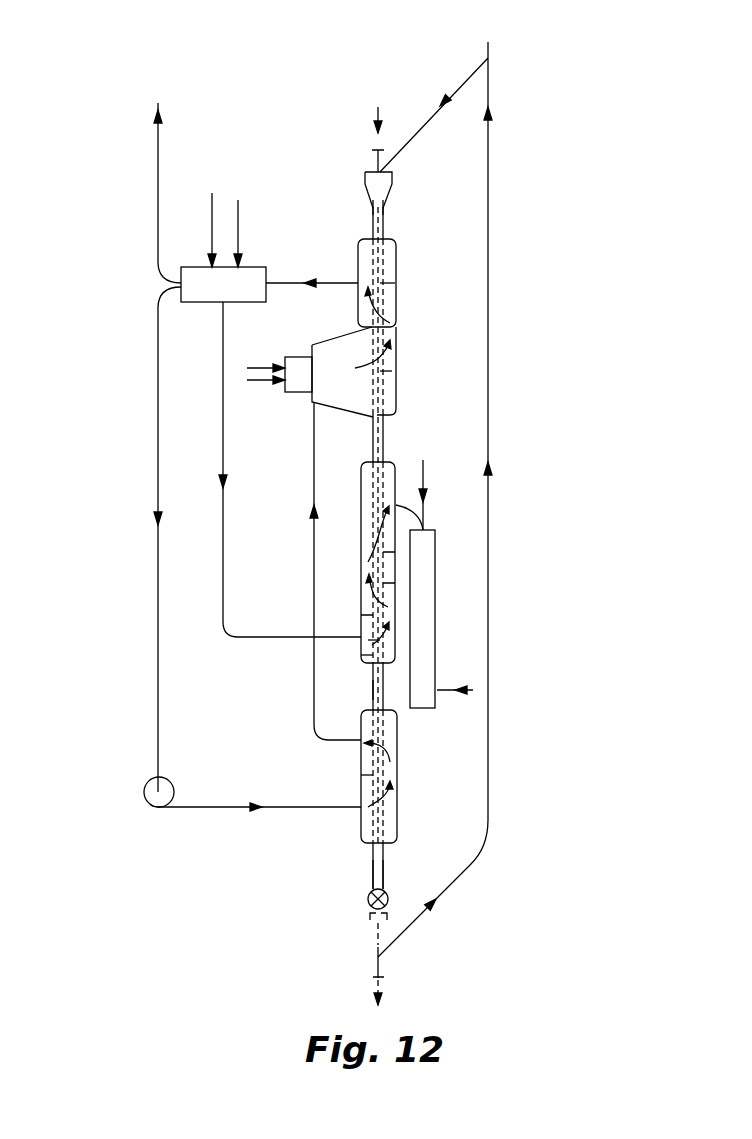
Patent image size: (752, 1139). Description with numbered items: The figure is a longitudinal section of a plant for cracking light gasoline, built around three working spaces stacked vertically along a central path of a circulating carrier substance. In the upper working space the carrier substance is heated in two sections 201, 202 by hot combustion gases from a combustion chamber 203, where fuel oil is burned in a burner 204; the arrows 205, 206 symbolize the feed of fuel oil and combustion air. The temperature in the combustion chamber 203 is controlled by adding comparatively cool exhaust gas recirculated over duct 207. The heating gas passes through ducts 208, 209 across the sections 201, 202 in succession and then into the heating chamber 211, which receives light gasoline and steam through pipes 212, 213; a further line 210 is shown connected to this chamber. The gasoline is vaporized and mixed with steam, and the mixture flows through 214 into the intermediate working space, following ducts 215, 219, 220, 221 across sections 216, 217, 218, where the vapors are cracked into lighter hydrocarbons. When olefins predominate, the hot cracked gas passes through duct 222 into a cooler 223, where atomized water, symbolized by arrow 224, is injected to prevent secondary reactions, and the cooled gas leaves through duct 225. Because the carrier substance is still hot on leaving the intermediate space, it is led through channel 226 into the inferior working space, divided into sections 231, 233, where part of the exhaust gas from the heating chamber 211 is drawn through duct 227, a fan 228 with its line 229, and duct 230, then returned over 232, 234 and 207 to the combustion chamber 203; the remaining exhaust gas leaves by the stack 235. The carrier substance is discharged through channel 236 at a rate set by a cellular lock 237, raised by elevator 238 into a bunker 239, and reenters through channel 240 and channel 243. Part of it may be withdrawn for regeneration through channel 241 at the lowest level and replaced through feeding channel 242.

The section 201 is at (380, 371).
The section 202 is at (385, 283).
The combustion chamber 203 is at (342, 392).
The burner 204 is at (300, 385).
The arrow 205 is at (258, 382).
The arrow 206 is at (259, 367).
The duct 207 is at (314, 482).
The duct 208 is at (392, 367).
The duct 209 is at (365, 253).
The gas line 210 is at (293, 290).
The heating chamber 211 is at (250, 272).
The pipe 212 is at (212, 200).
The pipe 213 is at (238, 205).
The flow path 214 is at (219, 495).
The duct 215 is at (372, 655).
The section 216 is at (368, 640).
The section 217 is at (385, 587).
The section 218 is at (378, 475).
The duct 219 is at (362, 615).
The duct 220 is at (372, 552).
The duct 221 is at (390, 497).
The duct 222 is at (392, 499).
The cooler 223 is at (425, 668).
The arrow 224 is at (430, 490).
The duct 225 is at (473, 690).
The channel 226 is at (380, 693).
The duct 227 is at (157, 707).
The pump 228 is at (147, 789).
The line 229 is at (208, 810).
The duct 230 is at (368, 818).
The section 231 is at (370, 815).
The path 232 is at (390, 803).
The section 233 is at (380, 767).
The path 234 is at (368, 758).
The stack 235 is at (157, 161).
The channel 236 is at (373, 873).
The cellular lock 237 is at (368, 897).
The elevator 238 is at (428, 908).
The bunker 239 is at (387, 183).
The channel 240 is at (383, 220).
The channel 241 is at (375, 960).
The feeding channel 242 is at (372, 152).
The channel 243 is at (380, 438).